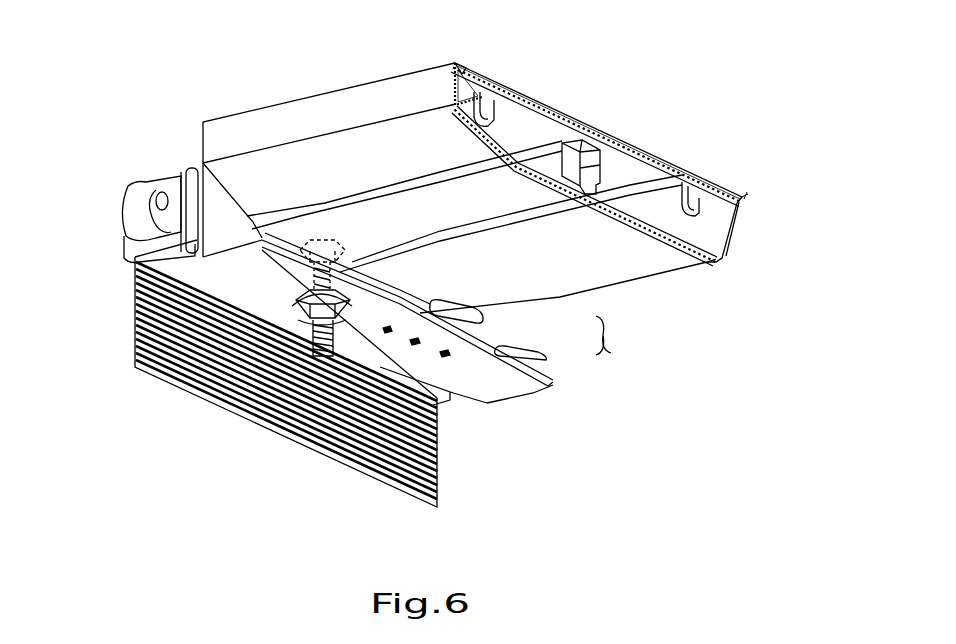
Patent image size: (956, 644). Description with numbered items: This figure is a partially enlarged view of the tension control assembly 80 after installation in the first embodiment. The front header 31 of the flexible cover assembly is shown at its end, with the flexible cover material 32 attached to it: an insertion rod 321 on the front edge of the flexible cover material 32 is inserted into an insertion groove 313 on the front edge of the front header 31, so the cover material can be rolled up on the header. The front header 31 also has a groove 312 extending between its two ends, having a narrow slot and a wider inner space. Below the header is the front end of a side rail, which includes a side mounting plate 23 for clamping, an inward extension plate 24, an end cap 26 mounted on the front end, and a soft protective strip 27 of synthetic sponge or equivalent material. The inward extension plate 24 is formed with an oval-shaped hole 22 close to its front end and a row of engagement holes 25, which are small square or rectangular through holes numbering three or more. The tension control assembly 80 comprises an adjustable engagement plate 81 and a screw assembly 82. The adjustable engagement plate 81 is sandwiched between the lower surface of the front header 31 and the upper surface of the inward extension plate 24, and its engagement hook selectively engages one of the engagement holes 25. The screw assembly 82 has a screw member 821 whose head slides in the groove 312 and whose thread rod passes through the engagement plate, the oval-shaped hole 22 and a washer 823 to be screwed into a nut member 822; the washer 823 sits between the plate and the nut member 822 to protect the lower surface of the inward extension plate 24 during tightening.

The oval-shaped hole 22 is at (440, 405).
The side mounting plate 23 is at (136, 290).
The inward extension plate 24 is at (491, 394).
The engagement holes 25 is at (446, 356).
The end cap 26 is at (186, 174).
The soft protective strip 27 is at (131, 208).
The front header 31 is at (666, 168).
The flexible cover material 32 is at (543, 115).
The tension control assembly 80 is at (456, 318).
The adjustable engagement plate 81 is at (432, 312).
The screw assembly 82 is at (498, 351).
The groove 312 is at (594, 140).
The insertion groove 313 is at (462, 67).
The insertion rod 321 is at (447, 78).
The screw member 821 is at (344, 322).
The nut member 822 is at (318, 342).
The washer 823 is at (300, 306).